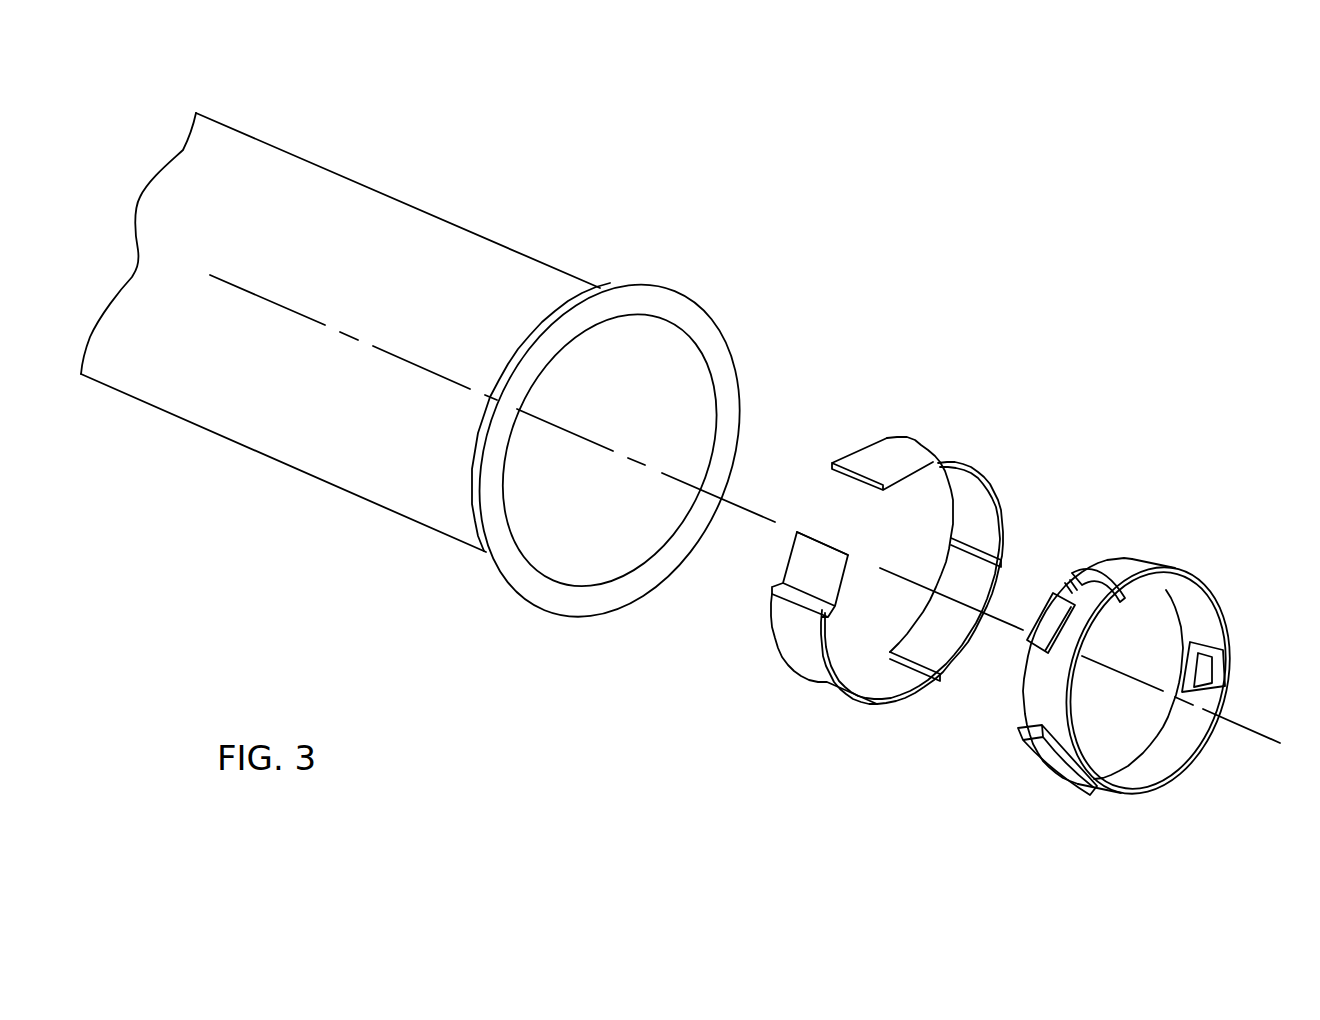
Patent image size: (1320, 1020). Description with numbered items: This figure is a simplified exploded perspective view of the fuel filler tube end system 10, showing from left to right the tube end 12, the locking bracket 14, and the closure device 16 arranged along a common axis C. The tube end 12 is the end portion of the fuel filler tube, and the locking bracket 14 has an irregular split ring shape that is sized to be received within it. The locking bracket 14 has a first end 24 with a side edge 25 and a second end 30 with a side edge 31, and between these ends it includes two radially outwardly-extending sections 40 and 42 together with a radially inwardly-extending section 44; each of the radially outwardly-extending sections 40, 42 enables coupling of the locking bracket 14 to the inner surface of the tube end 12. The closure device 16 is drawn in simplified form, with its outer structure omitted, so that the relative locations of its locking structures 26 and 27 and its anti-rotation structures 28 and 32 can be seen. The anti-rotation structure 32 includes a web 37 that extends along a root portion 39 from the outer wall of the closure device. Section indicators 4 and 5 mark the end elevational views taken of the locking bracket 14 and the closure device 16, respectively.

The system 10 is at (545, 152).
The tube end 12 is at (377, 309).
The locking bracket 14 is at (860, 403).
The closure device 16 is at (1043, 703).
The first end 24 is at (810, 575).
The side edge 25 is at (853, 563).
The locking structure 26 is at (1053, 608).
The locking structure 27 is at (1055, 767).
The anti-rotation structure 28 is at (1093, 573).
The second end 30 is at (875, 462).
The side edge 31 is at (948, 494).
The anti-rotation structure 32 is at (1233, 683).
The web 37 is at (1203, 668).
The root portion 39 is at (1200, 695).
The radially outwardly-extending section 40 is at (798, 640).
The radially outwardly-extending section 42 is at (977, 510).
The radially inwardly-extending section 44 is at (930, 633).
The section line 4 is at (714, 707).
The section line 5 is at (958, 813).
The central axis C is at (745, 520).